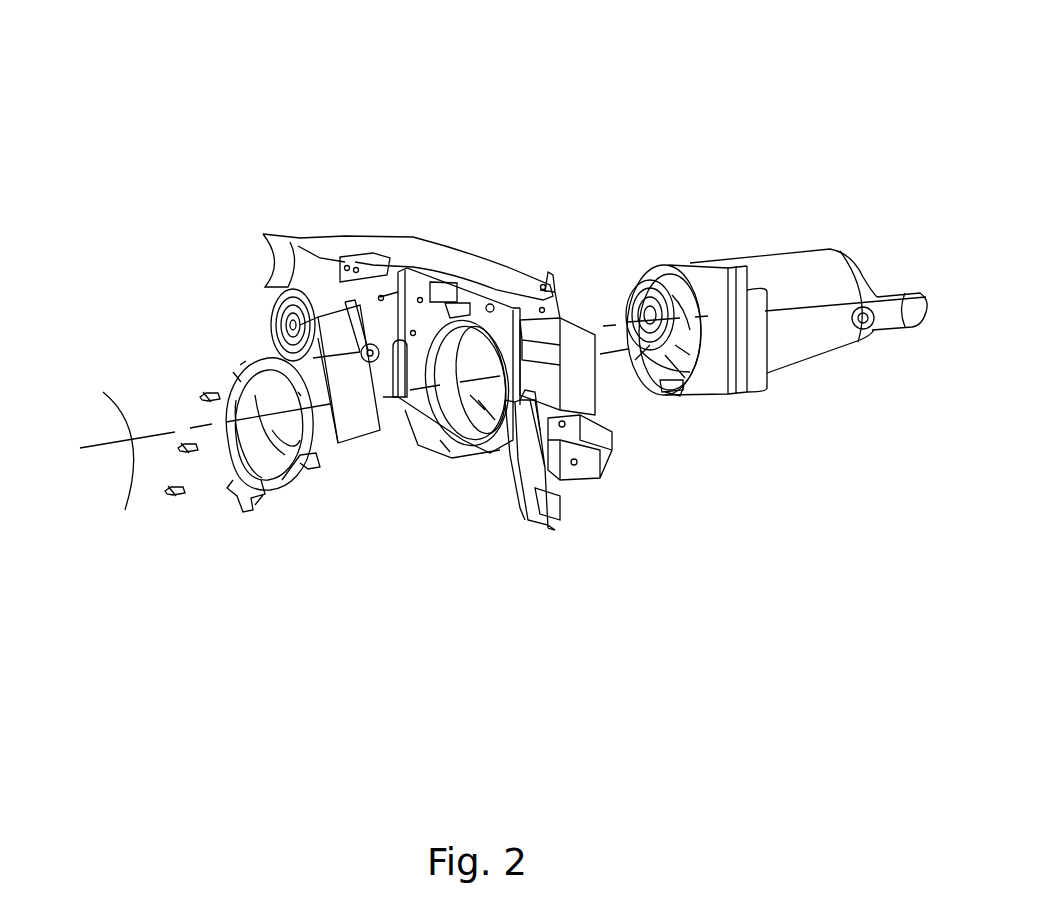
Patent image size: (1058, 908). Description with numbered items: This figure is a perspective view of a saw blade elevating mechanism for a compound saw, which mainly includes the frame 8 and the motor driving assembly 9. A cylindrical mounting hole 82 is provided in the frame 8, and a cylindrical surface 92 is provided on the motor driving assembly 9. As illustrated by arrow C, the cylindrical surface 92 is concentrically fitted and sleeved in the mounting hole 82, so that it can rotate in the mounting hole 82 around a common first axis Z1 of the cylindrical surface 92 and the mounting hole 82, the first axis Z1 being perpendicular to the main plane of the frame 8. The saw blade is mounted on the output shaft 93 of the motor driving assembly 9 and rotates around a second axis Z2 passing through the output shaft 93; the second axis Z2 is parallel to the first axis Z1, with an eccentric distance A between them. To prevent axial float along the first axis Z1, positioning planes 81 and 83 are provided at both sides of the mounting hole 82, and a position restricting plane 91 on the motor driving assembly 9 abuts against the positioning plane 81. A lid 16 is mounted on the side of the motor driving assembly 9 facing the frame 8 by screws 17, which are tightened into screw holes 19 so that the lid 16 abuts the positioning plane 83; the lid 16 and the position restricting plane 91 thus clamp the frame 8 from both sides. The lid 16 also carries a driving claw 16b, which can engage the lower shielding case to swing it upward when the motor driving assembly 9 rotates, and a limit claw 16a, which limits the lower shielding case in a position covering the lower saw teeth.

The frame 8 is at (346, 240).
The motor driving assembly 9 is at (788, 258).
The lid 16 is at (240, 365).
The limit claw 16a is at (250, 512).
The driving claw 16b is at (308, 470).
The screws 17 is at (200, 395).
The screw holes 19 is at (678, 398).
The positioning plane 81 is at (580, 440).
The mounting hole 82 is at (468, 422).
The positioning plane 83 is at (432, 408).
The position restricting plane 91 is at (705, 262).
The cylindrical surface 92 is at (667, 262).
The output shaft 93 is at (600, 262).
The first axis Z1 is at (354, 398).
The second axis Z2 is at (747, 307).
The eccentric distance A is at (600, 262).
The arrow C is at (128, 470).